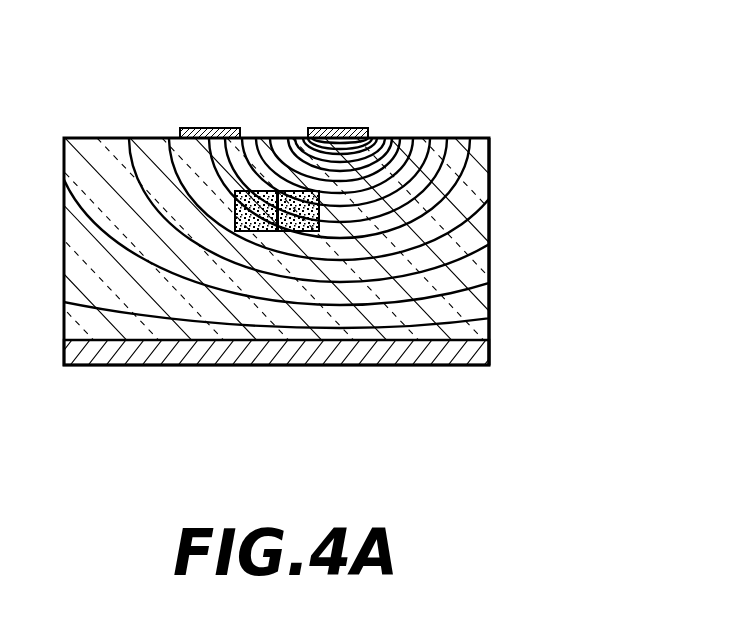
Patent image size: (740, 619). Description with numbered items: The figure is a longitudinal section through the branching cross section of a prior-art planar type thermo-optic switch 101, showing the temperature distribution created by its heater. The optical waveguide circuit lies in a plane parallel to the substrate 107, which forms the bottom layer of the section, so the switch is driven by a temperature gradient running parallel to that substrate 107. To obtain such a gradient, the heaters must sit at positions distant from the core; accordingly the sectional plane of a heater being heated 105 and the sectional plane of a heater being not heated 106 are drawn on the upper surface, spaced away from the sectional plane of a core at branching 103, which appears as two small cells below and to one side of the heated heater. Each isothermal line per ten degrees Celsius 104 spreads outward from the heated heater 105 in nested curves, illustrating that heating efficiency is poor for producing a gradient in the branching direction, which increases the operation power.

The planar type thermo-optic switch 101 is at (466, 137).
The sectional plane of a core at branching 103 is at (235, 212).
The isothermal line per 10 C 104 is at (490, 295).
The sectional plane of a heater being heated 105 is at (329, 128).
The sectional plane of a heater being not heated 106 is at (214, 128).
The substrate 107 is at (181, 366).